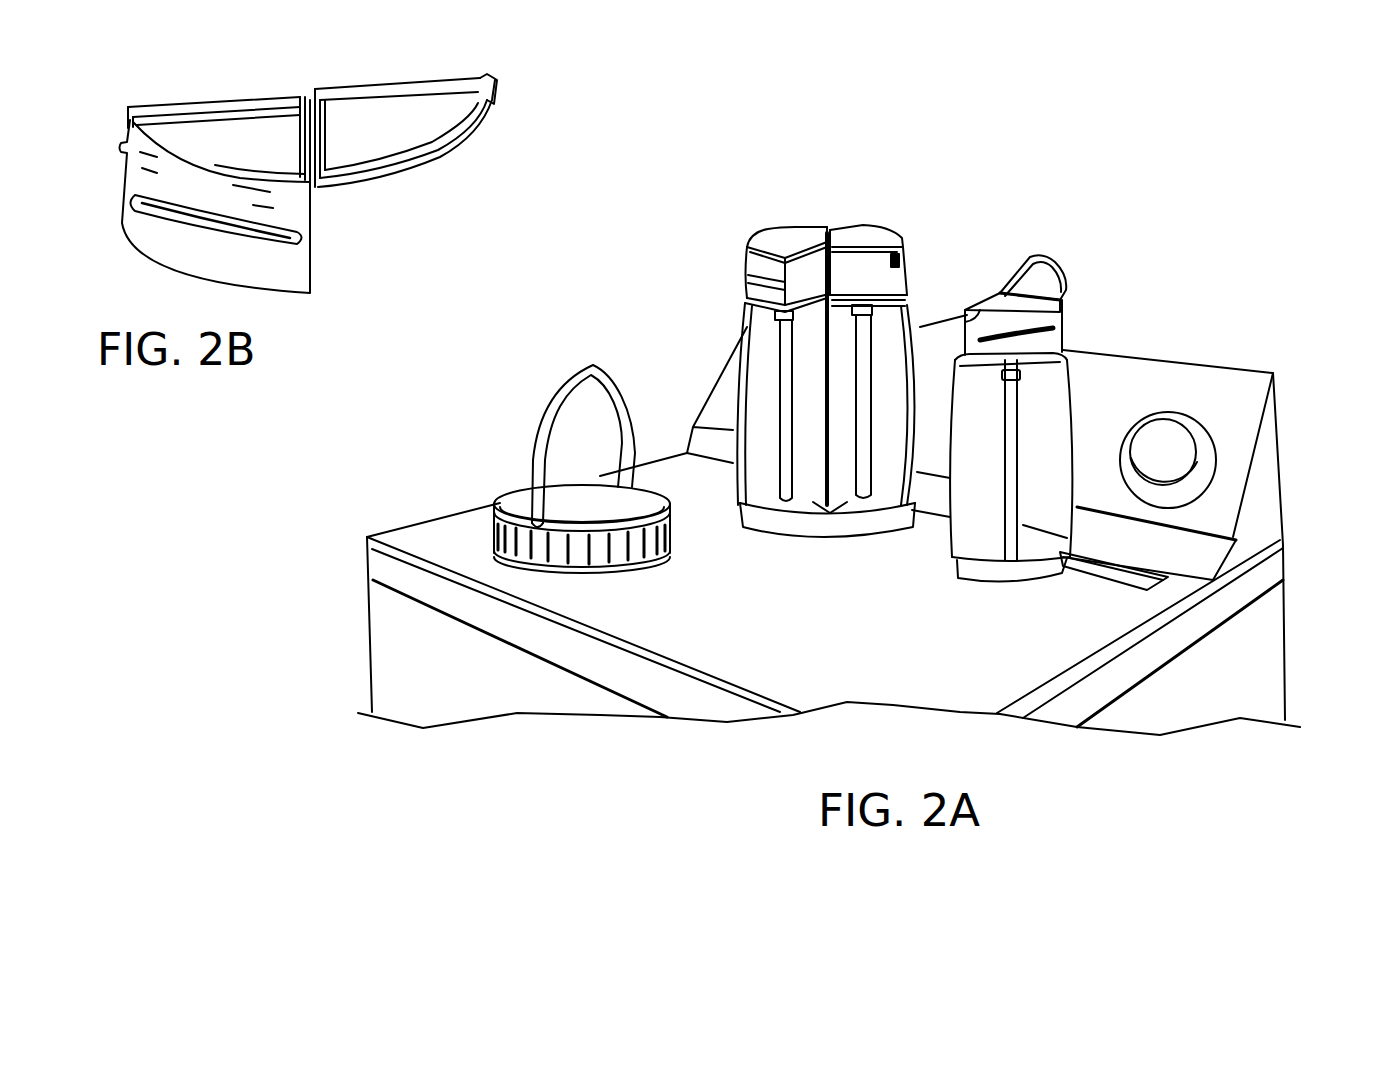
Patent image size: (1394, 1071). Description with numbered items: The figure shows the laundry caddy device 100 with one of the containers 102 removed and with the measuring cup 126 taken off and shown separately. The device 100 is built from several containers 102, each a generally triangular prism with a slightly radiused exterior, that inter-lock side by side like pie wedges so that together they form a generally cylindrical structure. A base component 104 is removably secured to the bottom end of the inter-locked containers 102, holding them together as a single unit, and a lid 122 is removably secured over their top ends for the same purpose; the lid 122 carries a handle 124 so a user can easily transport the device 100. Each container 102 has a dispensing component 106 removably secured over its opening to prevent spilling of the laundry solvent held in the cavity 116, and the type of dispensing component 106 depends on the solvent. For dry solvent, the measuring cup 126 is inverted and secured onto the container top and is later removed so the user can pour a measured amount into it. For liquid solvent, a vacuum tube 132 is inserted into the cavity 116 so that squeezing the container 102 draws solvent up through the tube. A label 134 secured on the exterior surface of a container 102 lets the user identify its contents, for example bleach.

In FIG. 2A, the laundry caddy device 100 is at (1105, 140).
In FIG. 2A, the container 102 is at (742, 333).
In FIG. 2A, the base component 104 is at (807, 533).
In FIG. 2B, the dispensing component 106 is at (310, 215).
In FIG. 2A, the dispensing component 106 is at (883, 237).
In FIG. 2B, the cavity 116 is at (228, 147).
In FIG. 2A, the lid 122 is at (583, 573).
In FIG. 2A, the handle 124 is at (540, 443).
In FIG. 2B, the measuring cup 126 is at (393, 107).
In FIG. 2A, the vacuum tube 132 is at (862, 487).
In FIG. 2A, the label 134 is at (1157, 587).